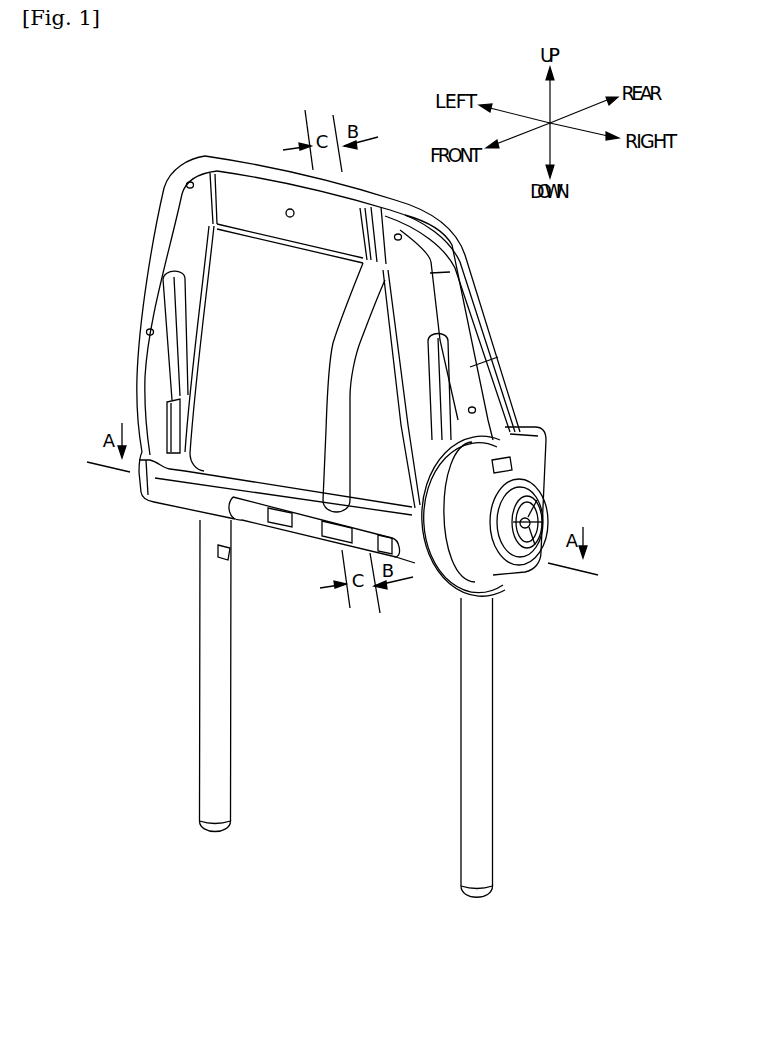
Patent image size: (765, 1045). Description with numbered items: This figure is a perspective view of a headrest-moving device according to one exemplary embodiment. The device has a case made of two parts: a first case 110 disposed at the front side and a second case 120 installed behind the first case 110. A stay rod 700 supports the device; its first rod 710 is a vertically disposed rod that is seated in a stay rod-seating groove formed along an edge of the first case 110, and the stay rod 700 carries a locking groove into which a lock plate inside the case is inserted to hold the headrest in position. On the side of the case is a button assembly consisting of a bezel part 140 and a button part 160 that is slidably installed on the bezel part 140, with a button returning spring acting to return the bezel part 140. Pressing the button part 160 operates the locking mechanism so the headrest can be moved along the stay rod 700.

The first case 110 is at (129, 340).
The second case 120 is at (484, 265).
The bezel part 140 is at (553, 491).
The button part 160 is at (539, 520).
The stay rod 700 is at (398, 708).
The first rod 710 is at (485, 747).